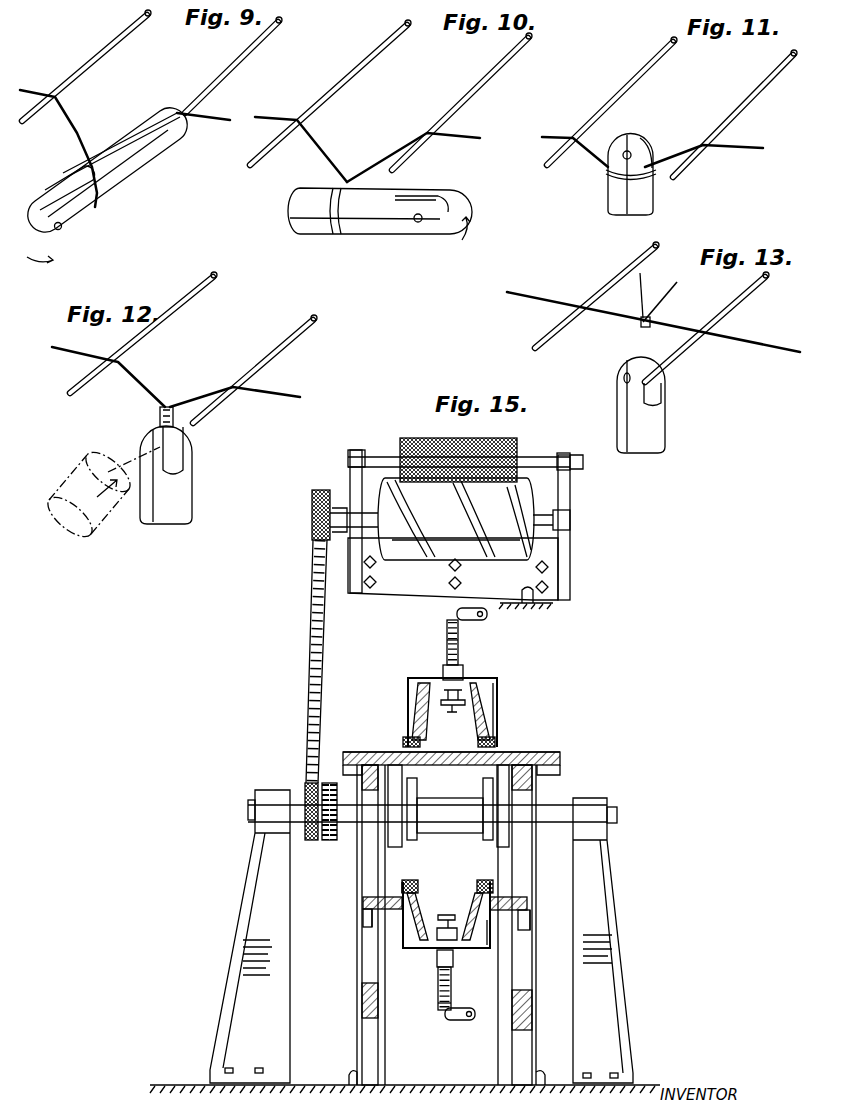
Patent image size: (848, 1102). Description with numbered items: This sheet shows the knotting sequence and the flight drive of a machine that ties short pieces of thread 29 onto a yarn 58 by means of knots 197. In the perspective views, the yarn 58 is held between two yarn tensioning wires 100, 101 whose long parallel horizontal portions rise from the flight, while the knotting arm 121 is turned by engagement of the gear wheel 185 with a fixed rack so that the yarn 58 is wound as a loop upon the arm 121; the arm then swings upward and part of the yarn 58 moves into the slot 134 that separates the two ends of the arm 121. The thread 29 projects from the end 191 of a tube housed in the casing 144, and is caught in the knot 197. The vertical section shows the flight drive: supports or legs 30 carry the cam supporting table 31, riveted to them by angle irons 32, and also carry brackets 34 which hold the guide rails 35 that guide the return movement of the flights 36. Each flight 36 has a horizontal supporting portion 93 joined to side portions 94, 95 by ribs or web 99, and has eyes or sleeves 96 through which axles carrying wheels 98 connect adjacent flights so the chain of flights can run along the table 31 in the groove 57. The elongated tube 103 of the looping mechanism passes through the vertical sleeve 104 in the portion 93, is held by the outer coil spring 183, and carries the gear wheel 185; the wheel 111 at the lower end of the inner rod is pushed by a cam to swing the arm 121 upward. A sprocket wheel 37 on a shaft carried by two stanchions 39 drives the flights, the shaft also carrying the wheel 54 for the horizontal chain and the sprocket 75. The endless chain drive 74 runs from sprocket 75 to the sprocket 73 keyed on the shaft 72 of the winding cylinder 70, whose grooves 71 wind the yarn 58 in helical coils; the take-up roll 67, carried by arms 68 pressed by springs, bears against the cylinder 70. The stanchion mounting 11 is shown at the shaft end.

In FIG. 9, the yarn tensioning wire 100 is at (125, 44).
In FIG. 10, the yarn tensioning wire 100 is at (379, 51).
In FIG. 11, the yarn tensioning wire 100 is at (655, 63).
In FIG. 12, the yarn tensioning wire 100 is at (207, 290).
In FIG. 13, the yarn tensioning wire 100 is at (641, 264).
In FIG. 9, the yarn tensioning wire 101 is at (252, 52).
In FIG. 10, the yarn tensioning wire 101 is at (508, 63).
In FIG. 11, the yarn tensioning wire 101 is at (785, 63).
In FIG. 12, the yarn tensioning wire 101 is at (315, 326).
In FIG. 13, the yarn tensioning wire 101 is at (755, 301).
In FIG. 9, the yarn 58 is at (66, 112).
In FIG. 10, the yarn 58 is at (318, 135).
In FIG. 11, the yarn 58 is at (548, 136).
In FIG. 12, the yarn 58 is at (62, 350).
In FIG. 13, the yarn 58 is at (511, 297).
In FIG. 15, the yarn 58 is at (545, 578).
In FIG. 9, the knotting arm 121 is at (78, 222).
In FIG. 10, the knotting arm 121 is at (389, 230).
In FIG. 11, the knotting arm 121 is at (653, 196).
In FIG. 12, the knotting arm 121 is at (190, 495).
In FIG. 13, the knotting arm 121 is at (658, 420).
In FIG. 15, the knotting arm 121 is at (489, 624).
In FIG. 9, the slot 134 is at (45, 207).
In FIG. 10, the slot 134 is at (440, 195).
In FIG. 11, the slot 134 is at (651, 144).
In FIG. 12, the slot 134 is at (185, 458).
In FIG. 13, the slot 134 is at (667, 386).
In FIG. 12, the knot 197 is at (168, 405).
In FIG. 13, the knot 197 is at (644, 326).
In FIG. 12, the casing 144 is at (76, 473).
In FIG. 12, the end of the tube 191 is at (130, 452).
In FIG. 13, the thread 29 is at (673, 290).
In FIG. 15, the thread 29 is at (493, 606).
In FIG. 15, the take-up roll 67 is at (503, 434).
In FIG. 15, the arms 68 is at (350, 473).
In FIG. 15, the shaft of the winding cylinder 72 is at (565, 516).
In FIG. 15, the sprocket 73 is at (312, 540).
In FIG. 15, the endless chain drive 74 is at (313, 698).
In FIG. 15, the winding cylinder 70 is at (440, 560).
In FIG. 15, the grooves 71 is at (415, 560).
In FIG. 15, the outer coil spring 183 is at (447, 626).
In FIG. 15, the elongated tube 103 is at (447, 641).
In FIG. 15, the vertical sleeve 104 is at (443, 669).
In FIG. 15, the flight 36 is at (497, 682).
In FIG. 15, the horizontal supporting portion 93 is at (484, 686).
In FIG. 15, the side portion 94 is at (412, 689).
In FIG. 15, the ribs or web 99 is at (480, 698).
In FIG. 15, the side portion 95 is at (499, 713).
In FIG. 15, the gear wheel 185 is at (408, 696).
In FIG. 15, the wheel 111 is at (449, 815).
In FIG. 15, the groove 57 is at (516, 747).
In FIG. 15, the wheels 98 is at (403, 741).
In FIG. 15, the cam supporting table 31 is at (512, 755).
In FIG. 15, the angle irons 32 is at (345, 768).
In FIG. 15, the sprocket wheel 37 is at (483, 786).
In FIG. 15, the main shaft 11 is at (248, 809).
In FIG. 15, the sprocket 75 is at (306, 788).
In FIG. 15, the wheel 54 is at (334, 833).
In FIG. 15, the stanchion 39 is at (250, 921).
In FIG. 15, the supports or legs 30 is at (372, 1058).
In FIG. 15, the guide rails 35 is at (375, 896).
In FIG. 15, the brackets 34 is at (372, 913).
In FIG. 15, the eyes or sleeves 96 is at (408, 880).